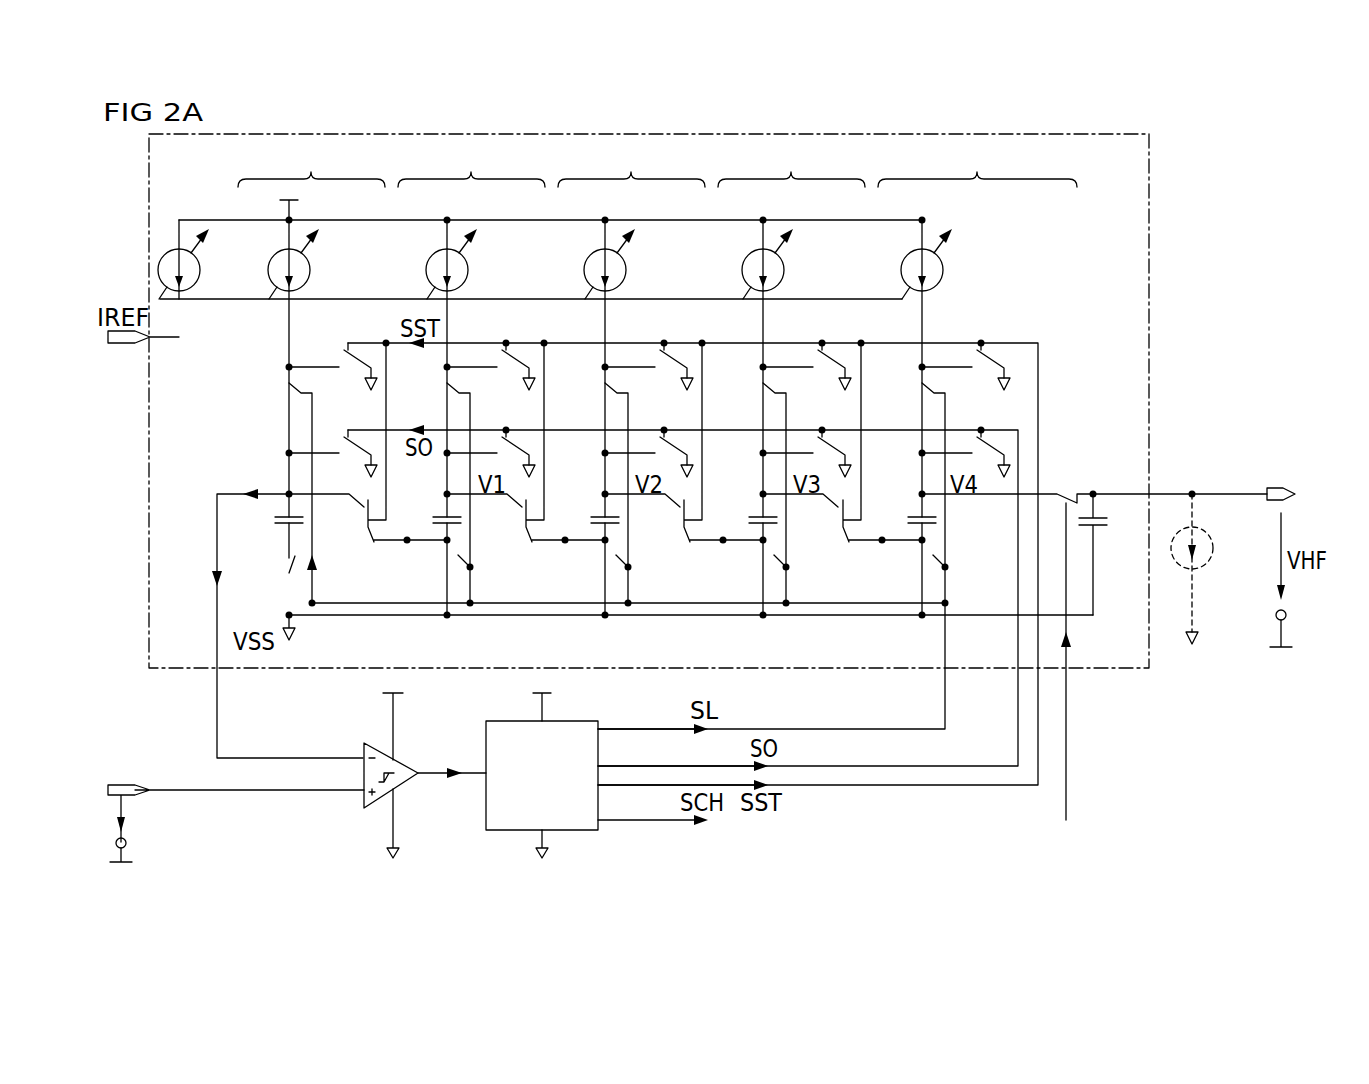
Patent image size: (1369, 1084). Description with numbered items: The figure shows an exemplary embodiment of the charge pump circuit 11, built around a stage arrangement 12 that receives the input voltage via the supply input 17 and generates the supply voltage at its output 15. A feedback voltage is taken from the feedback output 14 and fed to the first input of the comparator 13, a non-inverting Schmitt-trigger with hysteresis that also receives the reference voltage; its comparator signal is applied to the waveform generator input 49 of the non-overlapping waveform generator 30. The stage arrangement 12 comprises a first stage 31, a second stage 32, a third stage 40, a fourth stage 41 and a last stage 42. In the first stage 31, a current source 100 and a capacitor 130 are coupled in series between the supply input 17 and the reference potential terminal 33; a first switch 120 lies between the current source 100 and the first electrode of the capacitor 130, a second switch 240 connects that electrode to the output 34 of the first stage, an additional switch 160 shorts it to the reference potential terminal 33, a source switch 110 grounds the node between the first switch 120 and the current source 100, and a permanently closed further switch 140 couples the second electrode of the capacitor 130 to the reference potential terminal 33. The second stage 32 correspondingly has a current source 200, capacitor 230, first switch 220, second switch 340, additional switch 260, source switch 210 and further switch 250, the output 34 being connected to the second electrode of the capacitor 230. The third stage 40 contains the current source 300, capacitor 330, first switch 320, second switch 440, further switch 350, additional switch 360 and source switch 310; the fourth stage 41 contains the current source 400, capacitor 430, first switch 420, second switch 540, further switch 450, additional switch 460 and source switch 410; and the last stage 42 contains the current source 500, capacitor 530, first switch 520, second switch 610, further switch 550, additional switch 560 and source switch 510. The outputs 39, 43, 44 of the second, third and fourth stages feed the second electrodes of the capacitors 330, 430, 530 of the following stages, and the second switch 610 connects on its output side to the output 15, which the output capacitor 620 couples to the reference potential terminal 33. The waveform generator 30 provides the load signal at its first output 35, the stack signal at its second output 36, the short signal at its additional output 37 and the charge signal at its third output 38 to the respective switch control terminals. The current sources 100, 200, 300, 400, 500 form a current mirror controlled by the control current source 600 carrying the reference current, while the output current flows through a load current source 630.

The charge pump circuit 11 is at (1206, 190).
The stage arrangement 12 is at (1150, 328).
The comparator 13 is at (398, 793).
The feedback output 14 is at (287, 470).
The output 15 is at (1153, 494).
The supply input 17 is at (300, 206).
The waveform generator 30 is at (486, 734).
The first stage 31 is at (311, 166).
The second stage 32 is at (471, 166).
The reference potential terminal 33 is at (372, 391).
The output of the first stage 34 is at (408, 537).
The first output 35 is at (600, 730).
The second output 36 is at (600, 787).
The additional output 37 is at (600, 767).
The third output 38 is at (600, 822).
The output of the second stage 39 is at (566, 537).
The third stage 40 is at (631, 166).
The fourth stage 41 is at (791, 166).
The last stage 42 is at (977, 166).
The output of the third stage 43 is at (724, 537).
The output of the fourth stage 44 is at (883, 537).
The waveform generator input 49 is at (484, 782).
The current source 100 is at (311, 266).
The source switch 110 is at (347, 353).
The first switch 120 is at (288, 388).
The capacitor 130 is at (305, 523).
The further switch 140 is at (287, 566).
The additional switch 160 is at (346, 441).
The current source 200 is at (426, 276).
The source switch 210 is at (505, 353).
The first switch 220 is at (447, 387).
The capacitor 230 is at (461, 523).
The second switch 240 is at (374, 536).
The further switch 250 is at (460, 564).
The additional switch 260 is at (503, 441).
The current source 300 is at (584, 272).
The source switch 310 is at (663, 353).
The first switch 320 is at (605, 387).
The capacitor 330 is at (620, 523).
The second switch 340 is at (532, 540).
The further switch 350 is at (618, 564).
The additional switch 360 is at (662, 441).
The current source 400 is at (742, 272).
The source switch 410 is at (821, 353).
The first switch 420 is at (763, 387).
The capacitor 430 is at (778, 523).
The second switch 440 is at (690, 540).
The further switch 450 is at (776, 564).
The additional switch 460 is at (820, 441).
The current source 500 is at (900, 272).
The source switch 510 is at (980, 353).
The first switch 520 is at (922, 387).
The capacitor 530 is at (937, 523).
The second switch 540 is at (849, 540).
The further switch 550 is at (935, 564).
The additional switch 560 is at (979, 441).
The control current source 600 is at (202, 268).
The second switch 610 is at (1061, 497).
The output capacitor 620 is at (1107, 528).
The load current source 630 is at (1196, 572).